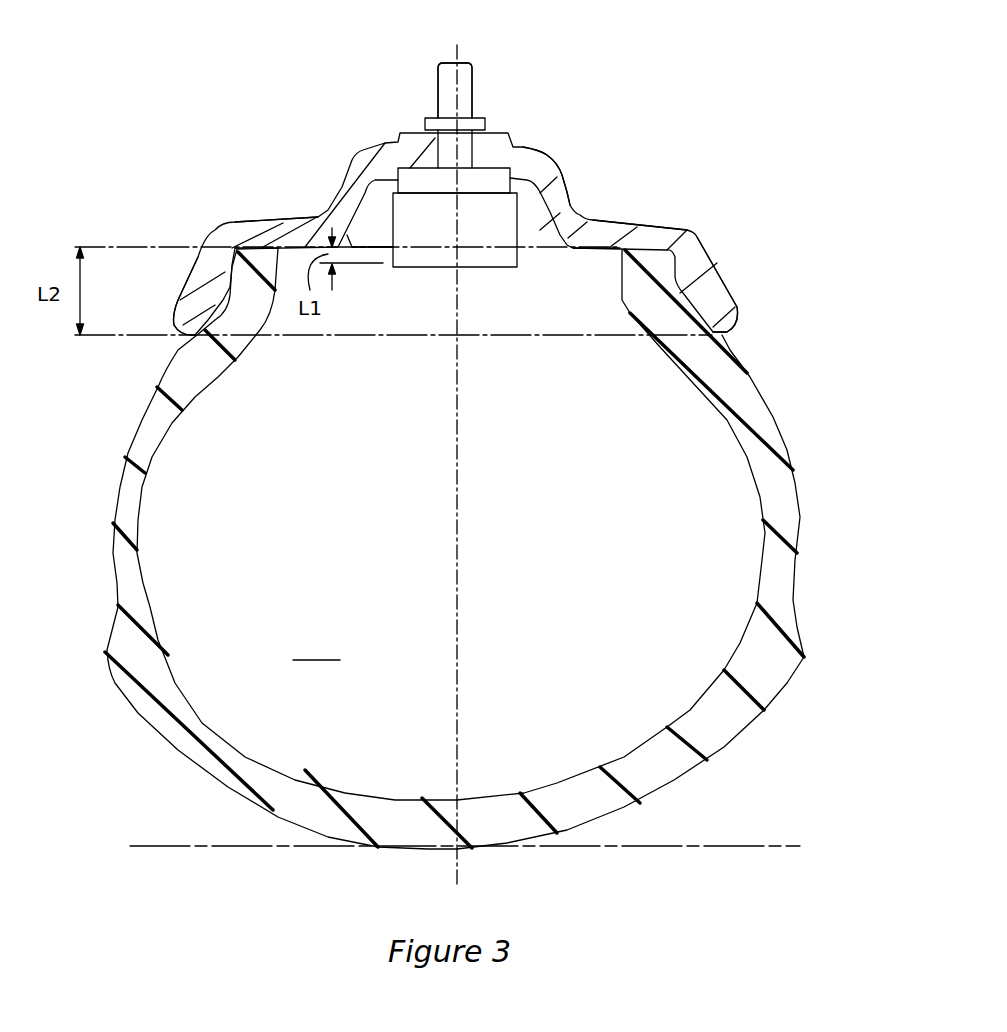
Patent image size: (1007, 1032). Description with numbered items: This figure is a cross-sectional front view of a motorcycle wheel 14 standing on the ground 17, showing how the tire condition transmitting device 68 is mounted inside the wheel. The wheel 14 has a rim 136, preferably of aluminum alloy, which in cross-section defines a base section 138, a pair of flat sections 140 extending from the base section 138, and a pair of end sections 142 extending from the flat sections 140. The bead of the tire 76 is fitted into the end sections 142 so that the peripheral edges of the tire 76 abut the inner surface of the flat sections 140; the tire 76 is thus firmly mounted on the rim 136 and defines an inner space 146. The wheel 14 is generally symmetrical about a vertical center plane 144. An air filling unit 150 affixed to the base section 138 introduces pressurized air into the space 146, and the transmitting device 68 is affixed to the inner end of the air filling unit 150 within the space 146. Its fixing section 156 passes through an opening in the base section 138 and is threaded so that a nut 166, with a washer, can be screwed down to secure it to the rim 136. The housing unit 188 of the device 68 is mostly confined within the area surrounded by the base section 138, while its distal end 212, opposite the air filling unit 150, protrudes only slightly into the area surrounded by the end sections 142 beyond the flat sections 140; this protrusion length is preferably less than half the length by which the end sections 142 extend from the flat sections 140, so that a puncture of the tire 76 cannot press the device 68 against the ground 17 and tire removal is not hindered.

The front steerable wheel 14 is at (661, 102).
The ground 17 is at (757, 845).
The tire condition transmitting device 68 is at (437, 267).
The tire 76 is at (782, 480).
The rim 136 is at (708, 248).
The base section 138 is at (510, 153).
The flat sections 140 is at (297, 230).
The end sections 142 is at (210, 290).
The vertical center plane 144 is at (457, 607).
The inner space 146 is at (317, 646).
The air filling unit 150 is at (437, 78).
The fixing section 156 is at (473, 82).
The nut 166 is at (427, 125).
The housing unit 188 is at (545, 228).
The distal end 212 is at (545, 247).